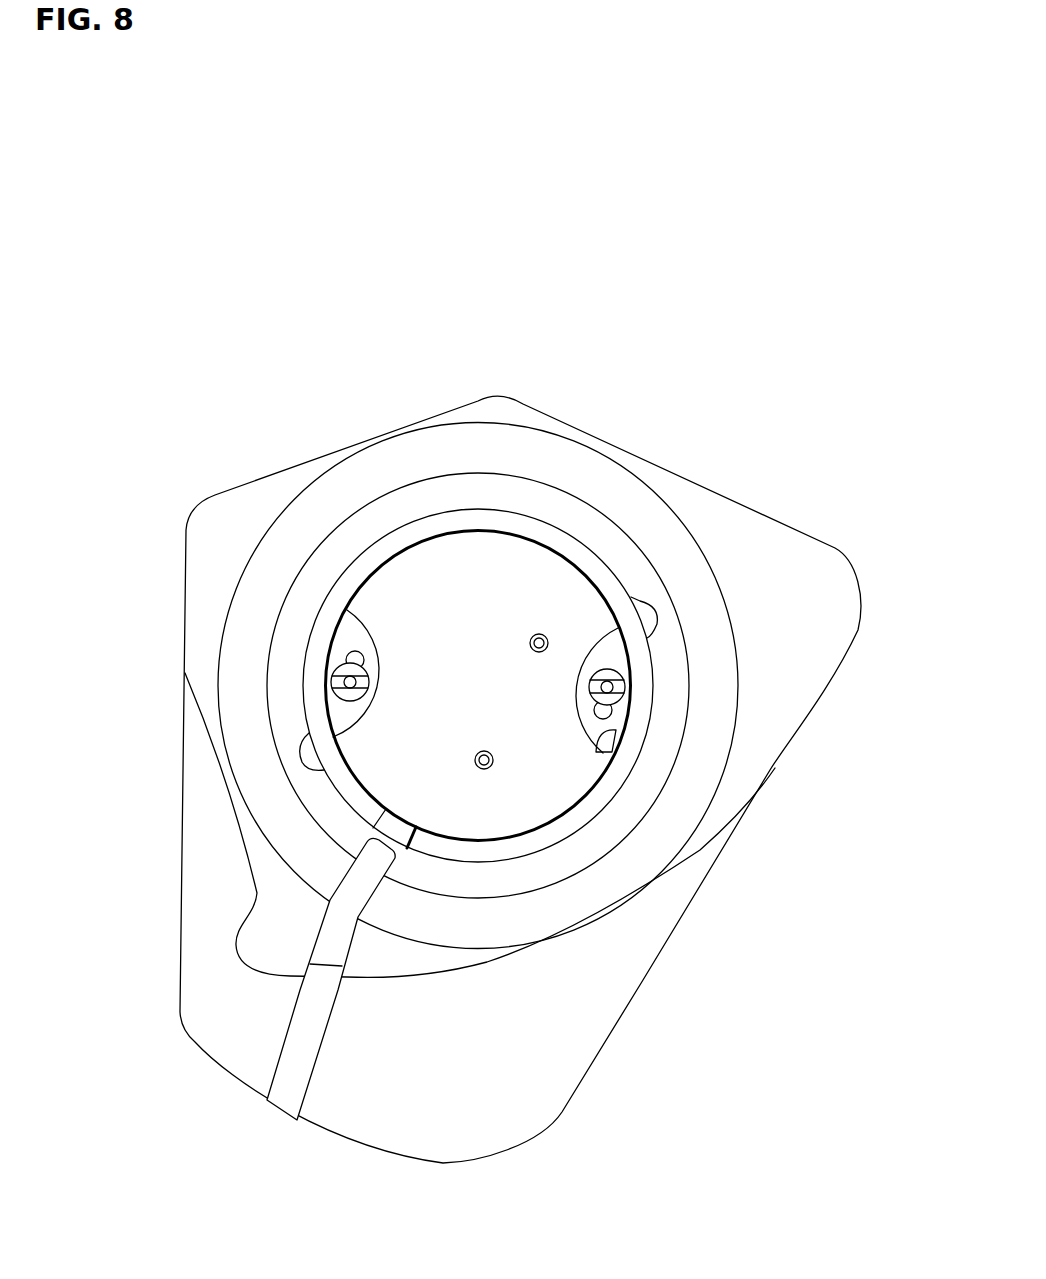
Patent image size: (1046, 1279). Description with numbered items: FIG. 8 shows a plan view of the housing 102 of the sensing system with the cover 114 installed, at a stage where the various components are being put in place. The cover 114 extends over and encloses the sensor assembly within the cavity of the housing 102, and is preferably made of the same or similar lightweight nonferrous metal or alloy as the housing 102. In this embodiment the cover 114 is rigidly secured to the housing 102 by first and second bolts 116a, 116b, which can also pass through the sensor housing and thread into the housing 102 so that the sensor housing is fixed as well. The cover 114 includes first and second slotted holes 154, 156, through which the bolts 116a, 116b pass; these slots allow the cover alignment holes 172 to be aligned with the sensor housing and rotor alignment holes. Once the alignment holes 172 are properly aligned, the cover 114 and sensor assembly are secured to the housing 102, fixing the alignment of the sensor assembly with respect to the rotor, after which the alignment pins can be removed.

The housing 102 is at (673, 497).
The cover 114 is at (515, 595).
The first bolt 116a is at (747, 718).
The second bolt 116b is at (213, 713).
The first slotted hole 154 is at (603, 720).
The second slotted hole 156 is at (357, 657).
The cover alignment holes 172 is at (546, 634).